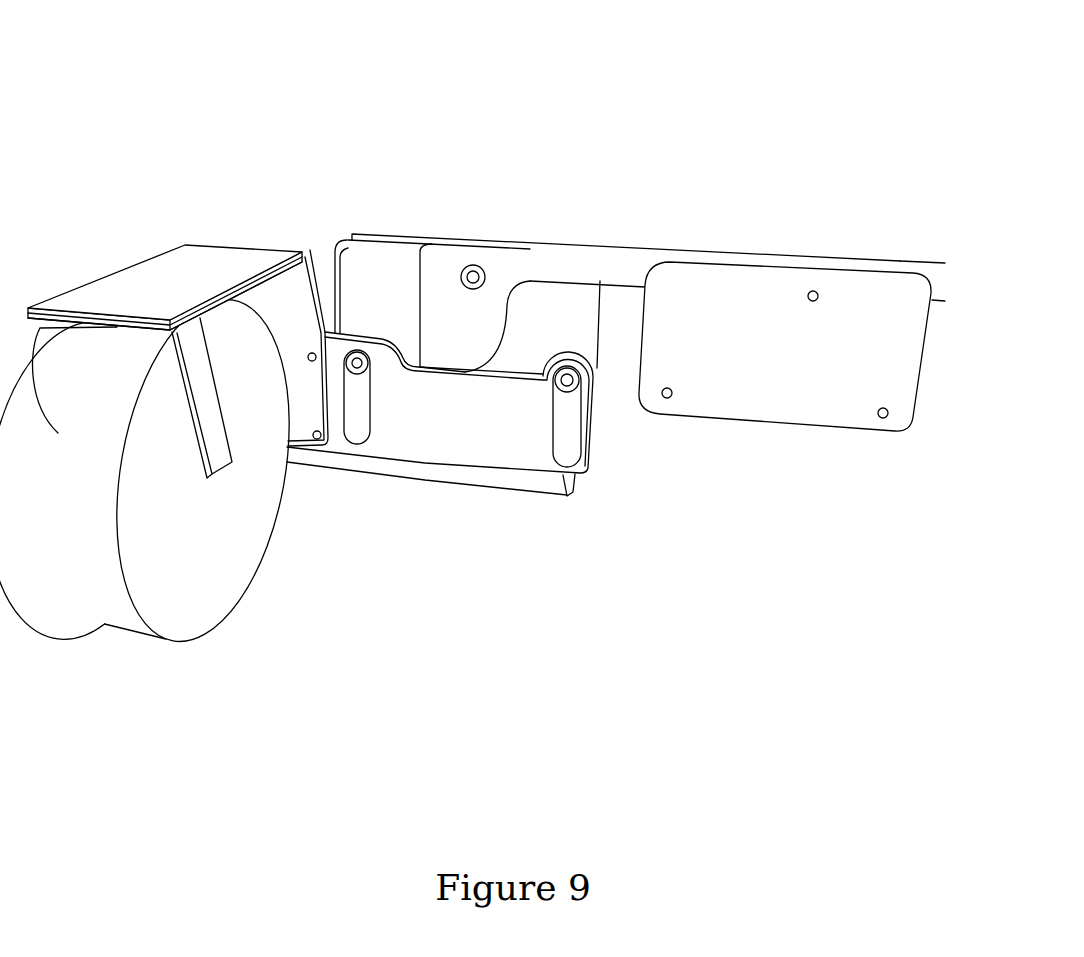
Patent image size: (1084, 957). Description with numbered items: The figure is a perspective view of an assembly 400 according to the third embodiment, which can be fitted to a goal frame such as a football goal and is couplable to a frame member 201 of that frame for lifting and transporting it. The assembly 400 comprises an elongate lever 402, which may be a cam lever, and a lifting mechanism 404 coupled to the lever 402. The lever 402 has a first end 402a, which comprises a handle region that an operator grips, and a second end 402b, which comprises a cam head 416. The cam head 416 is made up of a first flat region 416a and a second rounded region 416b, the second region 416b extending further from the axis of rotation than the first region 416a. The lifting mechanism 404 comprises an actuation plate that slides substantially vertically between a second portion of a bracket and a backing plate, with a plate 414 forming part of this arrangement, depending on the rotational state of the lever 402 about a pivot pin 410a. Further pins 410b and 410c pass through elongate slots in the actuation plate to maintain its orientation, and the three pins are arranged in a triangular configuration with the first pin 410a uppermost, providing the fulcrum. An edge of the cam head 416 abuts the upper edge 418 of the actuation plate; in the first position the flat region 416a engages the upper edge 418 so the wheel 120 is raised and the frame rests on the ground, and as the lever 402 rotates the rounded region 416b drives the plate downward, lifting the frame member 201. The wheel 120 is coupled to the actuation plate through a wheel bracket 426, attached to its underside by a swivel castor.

The wheel 120 is at (248, 533).
The frame member 201 is at (558, 490).
The assembly 400 is at (616, 313).
The elongate lever 402 is at (648, 246).
The first end 402a is at (935, 275).
The second end 402b is at (445, 262).
The lifting mechanism 404 is at (468, 436).
The pivot pin 410a is at (473, 274).
The further pin 410b is at (577, 383).
The further pin 410c is at (366, 370).
The mounting plate 414 is at (805, 413).
The cam head 416 is at (569, 321).
The first flat region 416a is at (423, 296).
The second rounded region 416b is at (478, 355).
The upper edge 418 is at (513, 378).
The wheel bracket 426 is at (172, 245).